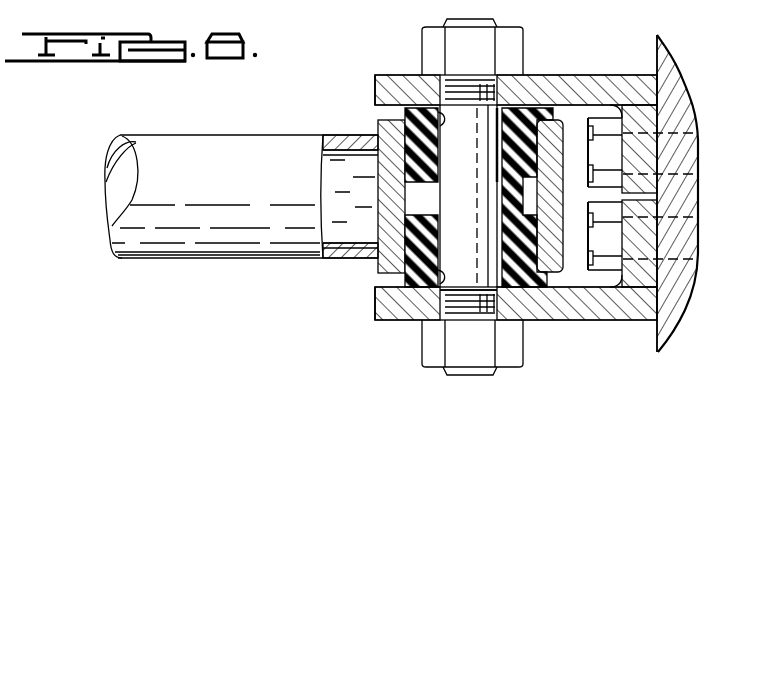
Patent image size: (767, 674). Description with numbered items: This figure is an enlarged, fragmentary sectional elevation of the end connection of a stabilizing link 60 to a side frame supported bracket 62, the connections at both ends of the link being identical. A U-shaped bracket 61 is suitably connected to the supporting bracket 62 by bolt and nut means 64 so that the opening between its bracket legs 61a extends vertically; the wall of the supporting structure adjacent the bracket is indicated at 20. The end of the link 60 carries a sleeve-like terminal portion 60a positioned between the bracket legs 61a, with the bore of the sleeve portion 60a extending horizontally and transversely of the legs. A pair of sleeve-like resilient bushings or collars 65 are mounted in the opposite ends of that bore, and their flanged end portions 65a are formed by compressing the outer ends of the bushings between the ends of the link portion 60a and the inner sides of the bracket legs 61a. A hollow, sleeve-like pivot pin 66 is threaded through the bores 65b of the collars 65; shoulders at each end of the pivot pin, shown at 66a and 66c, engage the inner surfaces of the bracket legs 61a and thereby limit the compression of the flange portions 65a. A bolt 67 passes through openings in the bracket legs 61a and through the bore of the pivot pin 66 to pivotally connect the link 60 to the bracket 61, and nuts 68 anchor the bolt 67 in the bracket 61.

The frame member 20 is at (684, 76).
The stabilizing link 60 is at (202, 150).
The sleeve-like terminal portion 60a is at (382, 265).
The U-shaped bracket 61 is at (368, 313).
The bracket legs 61a is at (375, 85).
The side frame supported bracket 62 is at (680, 287).
The bolt and nut means 64 is at (605, 118).
The resilient bushings 65 is at (439, 173).
The flanged end portions 65a is at (547, 106).
The bores 65b is at (411, 106).
The pivot pin 66 is at (490, 248).
The bolt shank 66a is at (516, 107).
The bolt threaded end 66c is at (430, 292).
The bolt 67 is at (490, 18).
The nuts 68 is at (432, 34).